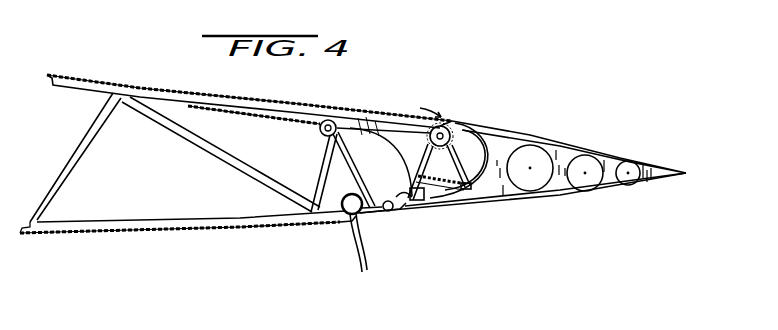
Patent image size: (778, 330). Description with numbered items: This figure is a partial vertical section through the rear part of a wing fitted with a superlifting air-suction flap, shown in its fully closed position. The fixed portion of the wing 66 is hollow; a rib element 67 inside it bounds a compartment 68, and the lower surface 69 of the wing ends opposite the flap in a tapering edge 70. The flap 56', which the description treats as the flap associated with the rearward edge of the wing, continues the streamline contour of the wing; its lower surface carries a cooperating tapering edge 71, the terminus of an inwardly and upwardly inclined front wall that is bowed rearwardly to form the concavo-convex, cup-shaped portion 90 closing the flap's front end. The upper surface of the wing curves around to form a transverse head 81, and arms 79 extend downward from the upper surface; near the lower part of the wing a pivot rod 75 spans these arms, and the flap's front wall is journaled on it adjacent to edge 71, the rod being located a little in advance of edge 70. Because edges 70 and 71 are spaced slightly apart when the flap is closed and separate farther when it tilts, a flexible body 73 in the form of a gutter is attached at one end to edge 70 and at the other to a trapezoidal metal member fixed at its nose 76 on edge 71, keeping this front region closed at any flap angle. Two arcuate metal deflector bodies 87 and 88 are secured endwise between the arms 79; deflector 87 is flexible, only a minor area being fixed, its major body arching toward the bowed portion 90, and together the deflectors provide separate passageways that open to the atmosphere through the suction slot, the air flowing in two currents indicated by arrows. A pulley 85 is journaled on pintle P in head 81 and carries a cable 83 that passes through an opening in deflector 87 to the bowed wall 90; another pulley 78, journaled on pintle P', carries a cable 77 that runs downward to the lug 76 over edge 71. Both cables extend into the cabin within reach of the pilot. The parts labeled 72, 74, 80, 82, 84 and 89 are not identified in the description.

The wing tip section 56' is at (650, 153).
The fixed portion of the wing 66 is at (123, 85).
The rib element 67 is at (217, 151).
The compartment 68 is at (217, 127).
The lower surface of the wing 69 is at (260, 228).
The tapering edge 70 is at (348, 227).
The tapering edge of the flap 71 is at (368, 218).
The fitting 72 is at (351, 229).
The flexible body 73 is at (361, 216).
The cable 74 is at (366, 247).
The pivot rod 75 is at (450, 214).
The lug 76 is at (407, 215).
The cable 77 is at (354, 170).
The pulley 78 is at (323, 114).
The arms 79 is at (412, 167).
The roller 80 is at (413, 215).
The head 81 is at (447, 122).
The outer guide 82 is at (456, 122).
The cable 83 is at (476, 130).
The cable band 84 is at (474, 186).
The pulley 85 is at (416, 113).
The flexible deflector body 87 is at (527, 209).
The deflector body 88 is at (461, 205).
The lightening holes 89 is at (561, 142).
The concavo-convex portion 90 is at (496, 150).